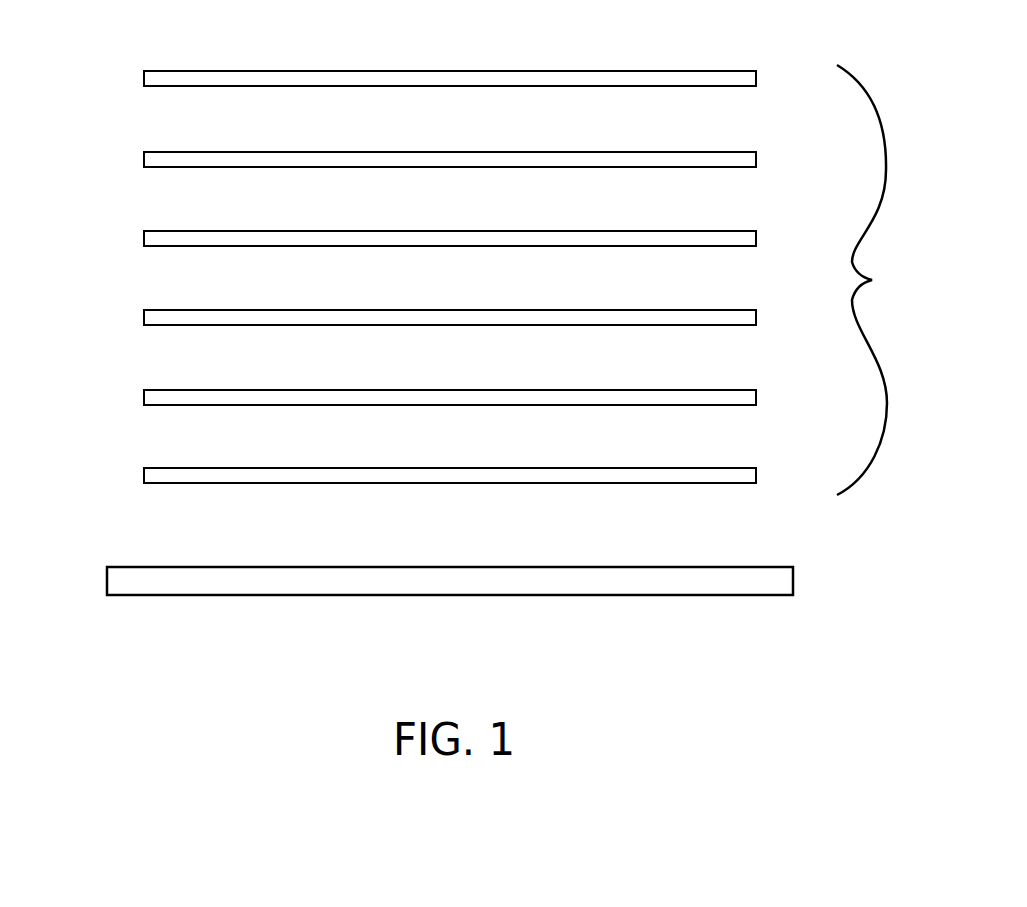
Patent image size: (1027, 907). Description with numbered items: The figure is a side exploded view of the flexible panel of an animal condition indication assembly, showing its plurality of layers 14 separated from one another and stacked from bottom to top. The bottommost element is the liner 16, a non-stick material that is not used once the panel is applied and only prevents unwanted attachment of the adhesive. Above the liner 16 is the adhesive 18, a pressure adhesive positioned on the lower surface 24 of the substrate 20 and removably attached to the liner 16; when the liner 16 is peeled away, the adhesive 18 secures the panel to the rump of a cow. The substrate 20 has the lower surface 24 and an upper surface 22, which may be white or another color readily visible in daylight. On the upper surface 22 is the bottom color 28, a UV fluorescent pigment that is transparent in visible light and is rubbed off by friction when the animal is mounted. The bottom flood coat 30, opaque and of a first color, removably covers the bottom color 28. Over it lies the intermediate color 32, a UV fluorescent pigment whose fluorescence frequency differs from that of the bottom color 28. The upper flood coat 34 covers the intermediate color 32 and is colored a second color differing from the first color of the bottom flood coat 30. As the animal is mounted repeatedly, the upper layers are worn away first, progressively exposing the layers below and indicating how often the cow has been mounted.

The layers 14 is at (878, 280).
The liner 16 is at (793, 577).
The adhesive 18 is at (144, 480).
The substrate 20 is at (144, 402).
The upper surface 22 is at (714, 468).
The lower surface 24 is at (719, 484).
The bottom color 28 is at (144, 322).
The bottom flood coat 30 is at (144, 243).
The intermediate color 32 is at (144, 164).
The upper flood coat 34 is at (144, 83).